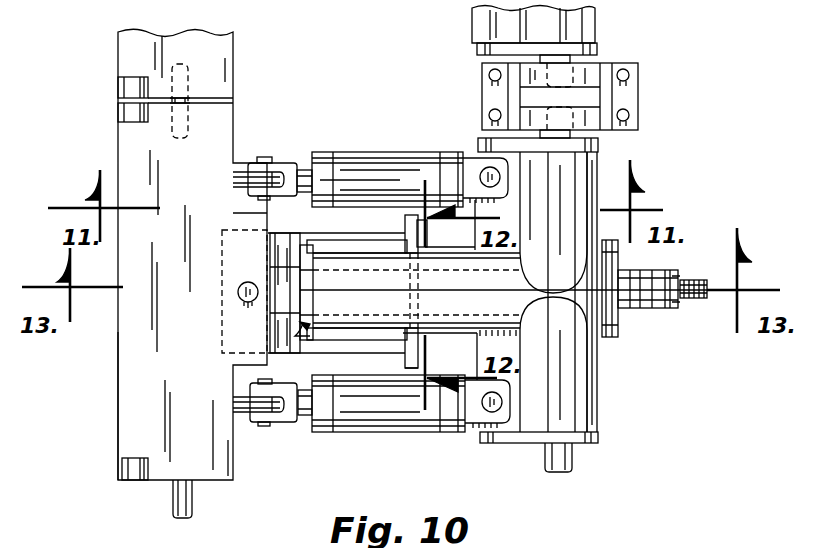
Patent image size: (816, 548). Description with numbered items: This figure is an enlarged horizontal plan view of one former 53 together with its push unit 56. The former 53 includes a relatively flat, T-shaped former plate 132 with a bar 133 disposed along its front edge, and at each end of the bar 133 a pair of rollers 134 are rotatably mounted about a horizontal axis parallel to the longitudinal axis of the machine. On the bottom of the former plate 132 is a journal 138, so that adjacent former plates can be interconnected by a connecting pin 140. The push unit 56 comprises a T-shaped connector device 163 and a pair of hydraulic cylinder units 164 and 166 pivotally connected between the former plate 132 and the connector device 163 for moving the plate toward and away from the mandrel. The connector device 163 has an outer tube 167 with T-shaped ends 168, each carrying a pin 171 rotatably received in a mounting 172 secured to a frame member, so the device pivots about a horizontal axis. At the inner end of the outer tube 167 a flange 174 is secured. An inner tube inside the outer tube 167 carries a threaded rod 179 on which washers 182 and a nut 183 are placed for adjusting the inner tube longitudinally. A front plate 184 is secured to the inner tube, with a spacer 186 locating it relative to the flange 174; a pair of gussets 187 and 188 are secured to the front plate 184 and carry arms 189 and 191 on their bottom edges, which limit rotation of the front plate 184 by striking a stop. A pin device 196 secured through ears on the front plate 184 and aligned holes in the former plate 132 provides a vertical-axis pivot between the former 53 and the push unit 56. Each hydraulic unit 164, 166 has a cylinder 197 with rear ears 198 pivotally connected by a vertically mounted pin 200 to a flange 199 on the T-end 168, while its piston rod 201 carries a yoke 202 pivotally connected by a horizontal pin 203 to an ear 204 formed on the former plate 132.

The former 53 is at (110, 397).
The push unit 56 is at (313, 478).
The former plate 132 is at (133, 45).
The bar 133 is at (118, 346).
The rollers 134 is at (118, 112).
The journal 138 is at (205, 72).
The connecting pin 140 is at (197, 100).
The T-shaped connector device 163 is at (445, 242).
The hydraulic cylinder unit 164 is at (381, 152).
The hydraulic cylinder unit 166 is at (375, 418).
The outer tube 167 is at (435, 334).
The T-shaped ends 168 is at (580, 167).
The pin 171 is at (578, 72).
The mounting 172 is at (640, 90).
The flange 174 is at (308, 340).
The threaded rod 179 is at (700, 280).
The washers 182 is at (672, 305).
The nut 183 is at (678, 305).
The front plate 184 is at (282, 242).
The spacer 186 is at (305, 280).
The gusset 187 is at (410, 236).
The gusset 188 is at (415, 367).
The arm 189 is at (362, 250).
The arm 191 is at (405, 313).
The pin device 196 is at (243, 302).
The cylinder 197 is at (356, 165).
The ears 198 is at (468, 158).
The flange 199 is at (512, 163).
The pin 200 is at (500, 180).
The piston rod 201 is at (305, 172).
The yoke 202 is at (248, 172).
The pin 203 is at (263, 157).
The ear 204 is at (233, 182).